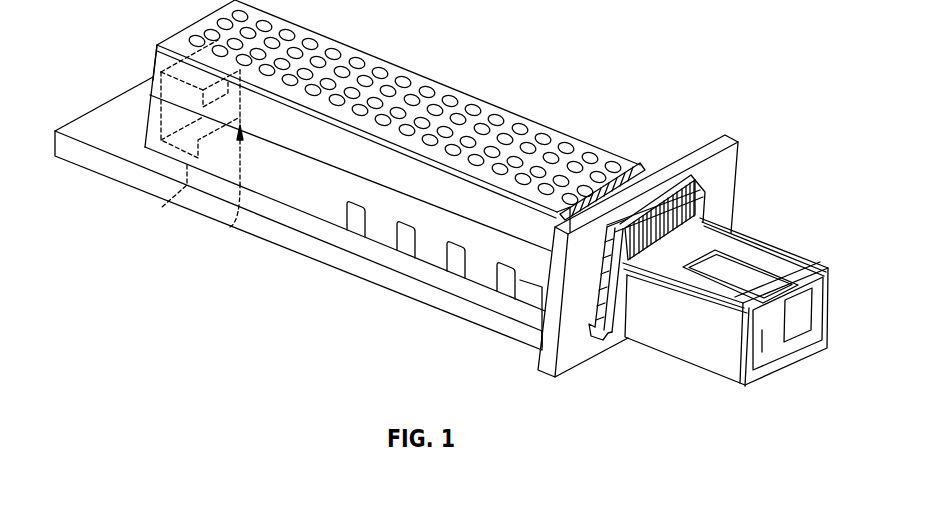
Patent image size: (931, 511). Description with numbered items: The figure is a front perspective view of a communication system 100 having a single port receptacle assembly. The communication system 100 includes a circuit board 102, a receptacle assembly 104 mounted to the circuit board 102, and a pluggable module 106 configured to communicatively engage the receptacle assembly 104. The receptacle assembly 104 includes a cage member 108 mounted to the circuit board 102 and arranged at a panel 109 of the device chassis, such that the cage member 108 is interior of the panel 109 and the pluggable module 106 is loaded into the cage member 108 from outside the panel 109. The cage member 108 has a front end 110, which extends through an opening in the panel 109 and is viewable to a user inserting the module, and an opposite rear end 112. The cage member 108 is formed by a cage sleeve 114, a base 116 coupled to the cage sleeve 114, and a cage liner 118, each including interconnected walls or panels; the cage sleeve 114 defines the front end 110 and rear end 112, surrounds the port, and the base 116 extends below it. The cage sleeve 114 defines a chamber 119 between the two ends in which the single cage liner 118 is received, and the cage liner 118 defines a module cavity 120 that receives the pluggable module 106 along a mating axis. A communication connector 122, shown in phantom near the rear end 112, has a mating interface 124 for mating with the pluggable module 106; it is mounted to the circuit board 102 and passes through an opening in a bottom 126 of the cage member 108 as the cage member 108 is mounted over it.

The communication system 100 is at (508, 66).
The circuit board 102 is at (95, 132).
The receptacle assembly 104 is at (555, 130).
The pluggable module 106 is at (691, 373).
The cage member 108 is at (327, 193).
The panel 109 is at (567, 358).
The front end 110 is at (708, 195).
The rear end 112 is at (153, 68).
The cage sleeve 114 is at (420, 175).
The base 116 is at (435, 233).
The cage liner 118 is at (700, 208).
The chamber 119 is at (622, 318).
The module cavity 120 is at (645, 247).
The communication connector 122 is at (162, 207).
The mating interface 124 is at (230, 227).
The bottom 126 is at (281, 203).